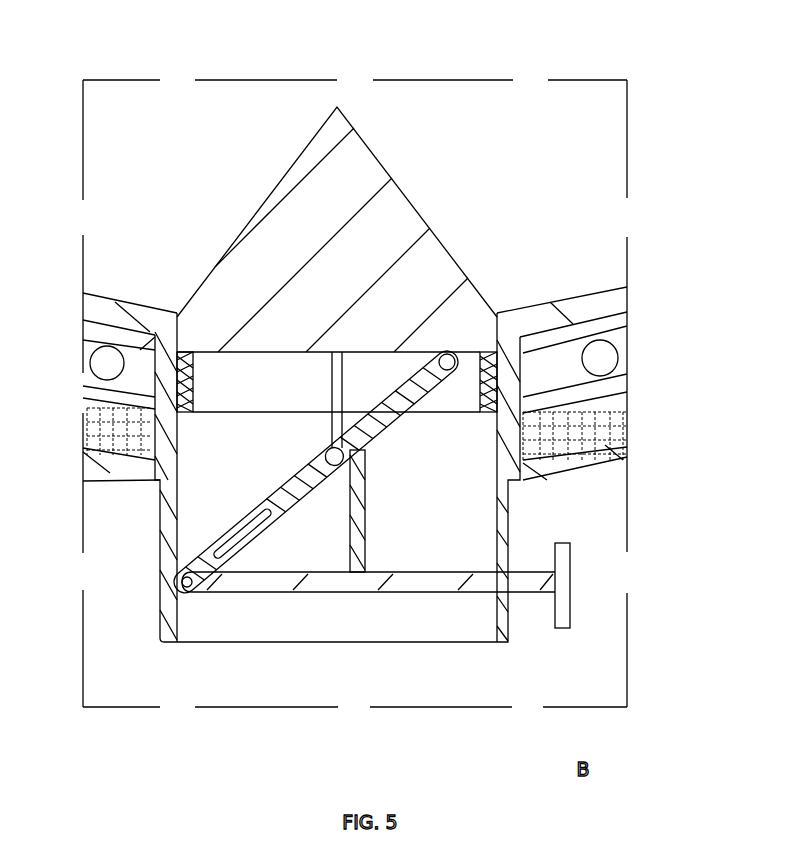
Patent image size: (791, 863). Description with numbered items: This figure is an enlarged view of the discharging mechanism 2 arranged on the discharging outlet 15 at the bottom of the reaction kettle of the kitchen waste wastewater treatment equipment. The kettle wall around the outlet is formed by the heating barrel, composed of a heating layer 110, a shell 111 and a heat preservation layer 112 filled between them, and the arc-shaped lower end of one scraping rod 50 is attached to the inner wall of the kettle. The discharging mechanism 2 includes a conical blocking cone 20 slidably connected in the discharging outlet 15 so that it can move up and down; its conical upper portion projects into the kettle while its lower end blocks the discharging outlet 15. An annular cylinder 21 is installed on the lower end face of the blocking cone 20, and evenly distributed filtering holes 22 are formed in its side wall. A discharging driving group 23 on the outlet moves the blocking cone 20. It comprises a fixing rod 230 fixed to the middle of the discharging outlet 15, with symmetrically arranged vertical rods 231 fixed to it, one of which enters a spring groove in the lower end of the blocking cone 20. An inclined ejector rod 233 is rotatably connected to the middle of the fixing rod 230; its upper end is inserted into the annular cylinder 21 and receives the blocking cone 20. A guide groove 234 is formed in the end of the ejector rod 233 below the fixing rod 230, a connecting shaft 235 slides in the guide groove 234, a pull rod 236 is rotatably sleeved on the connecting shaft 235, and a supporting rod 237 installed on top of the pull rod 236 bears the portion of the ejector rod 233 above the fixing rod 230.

The blocking cone 20 is at (308, 183).
The ejector rod 233 is at (447, 355).
The discharging driving group 23 is at (505, 340).
The scraping rod 50 is at (613, 295).
The heating layer 110 is at (600, 358).
The heat preservation layer 112 is at (617, 420).
The shell 111 is at (607, 458).
The discharging mechanism 2 is at (570, 560).
The filtering holes 22 is at (135, 361).
The annular cylinder 21 is at (192, 372).
The vertical rod 231 is at (333, 405).
The fixing rod 230 is at (335, 457).
The guide groove 234 is at (185, 568).
The connecting shaft 235 is at (183, 585).
The discharging outlet 15 is at (272, 625).
The supporting rod 237 is at (360, 552).
The pull rod 236 is at (473, 592).